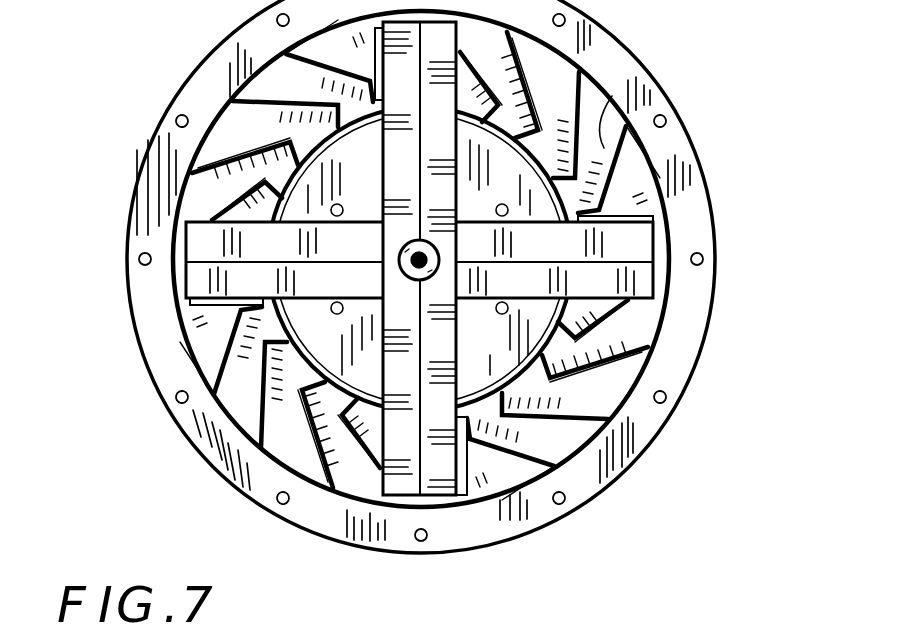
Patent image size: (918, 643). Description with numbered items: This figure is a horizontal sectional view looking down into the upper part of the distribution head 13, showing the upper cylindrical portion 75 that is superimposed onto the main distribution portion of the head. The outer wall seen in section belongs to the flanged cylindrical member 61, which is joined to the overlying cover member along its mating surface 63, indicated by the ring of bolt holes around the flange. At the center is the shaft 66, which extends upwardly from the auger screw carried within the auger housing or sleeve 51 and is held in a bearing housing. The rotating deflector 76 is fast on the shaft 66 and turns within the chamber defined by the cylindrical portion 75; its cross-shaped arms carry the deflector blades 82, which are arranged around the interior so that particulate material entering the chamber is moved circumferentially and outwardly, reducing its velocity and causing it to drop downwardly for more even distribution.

The distribution head 13 is at (722, 99).
The auger housing or sleeve 51 is at (461, 312).
The flanged cylindrical member 61 is at (705, 347).
The mating surface 63 is at (140, 256).
The shaft 66 is at (418, 240).
The upper cylindrical portion 75 is at (636, 176).
The rotating deflector 76 is at (630, 250).
The deflector blades 82 is at (532, 93).